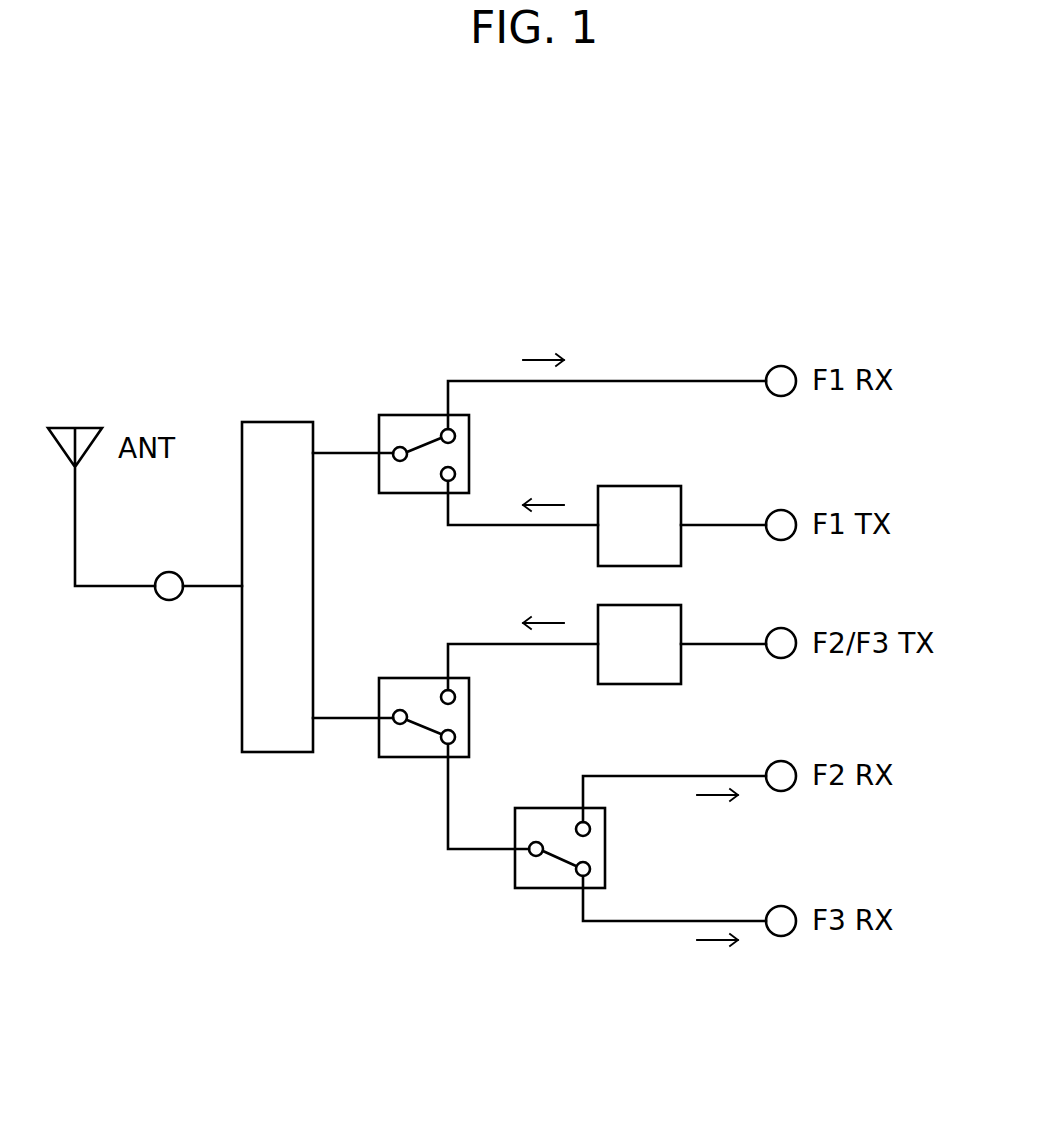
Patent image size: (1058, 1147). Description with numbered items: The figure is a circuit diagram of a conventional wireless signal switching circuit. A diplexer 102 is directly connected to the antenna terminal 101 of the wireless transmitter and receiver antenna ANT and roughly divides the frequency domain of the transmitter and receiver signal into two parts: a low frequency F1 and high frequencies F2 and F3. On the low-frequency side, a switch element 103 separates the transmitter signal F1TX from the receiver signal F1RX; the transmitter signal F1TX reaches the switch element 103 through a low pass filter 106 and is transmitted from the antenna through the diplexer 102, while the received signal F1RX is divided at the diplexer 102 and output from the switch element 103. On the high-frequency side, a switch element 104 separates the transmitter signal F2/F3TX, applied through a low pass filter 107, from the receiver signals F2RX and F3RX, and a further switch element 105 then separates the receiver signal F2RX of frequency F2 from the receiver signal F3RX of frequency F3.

The antenna terminal 101 is at (168, 600).
The diplexer 102 is at (278, 422).
The switch element 103 is at (410, 415).
The switch element 104 is at (403, 757).
The switch element 105 is at (556, 888).
The low pass filter 106 is at (638, 486).
The low pass filter 107 is at (638, 684).